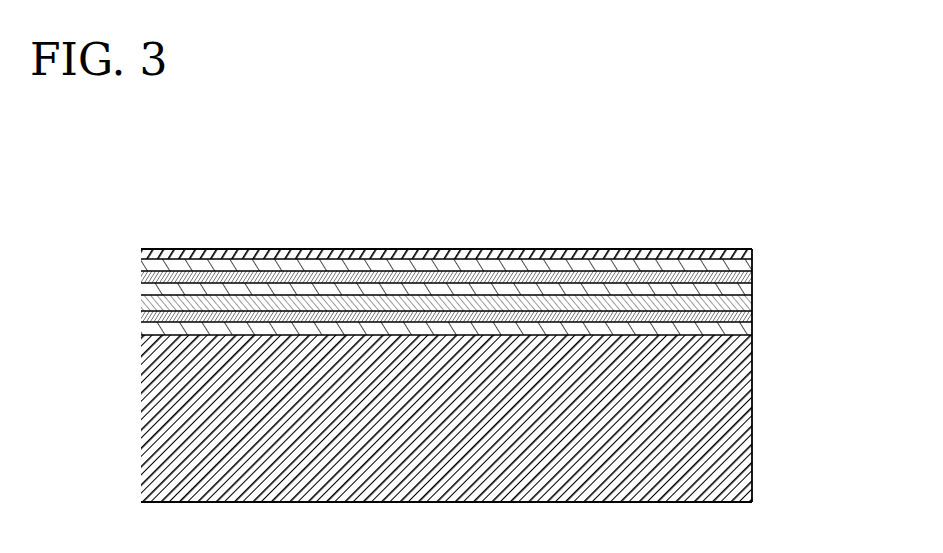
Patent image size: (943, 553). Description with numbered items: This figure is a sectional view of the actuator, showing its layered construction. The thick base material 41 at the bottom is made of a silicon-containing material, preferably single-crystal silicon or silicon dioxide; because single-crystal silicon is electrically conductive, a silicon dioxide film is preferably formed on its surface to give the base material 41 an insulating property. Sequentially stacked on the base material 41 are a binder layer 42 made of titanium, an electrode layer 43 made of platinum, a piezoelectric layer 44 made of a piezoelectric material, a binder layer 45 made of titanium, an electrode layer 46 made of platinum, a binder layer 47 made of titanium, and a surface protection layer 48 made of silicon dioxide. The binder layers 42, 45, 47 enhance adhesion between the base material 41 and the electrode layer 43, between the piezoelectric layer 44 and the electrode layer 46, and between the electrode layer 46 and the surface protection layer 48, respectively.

The base material 41 is at (753, 411).
The binder layer 42 is at (753, 329).
The electrode layer 43 is at (753, 317).
The piezoelectric layer 44 is at (753, 301).
The binder layer 45 is at (753, 291).
The electrode layer 46 is at (753, 280).
The binder layer 47 is at (753, 262).
The surface protection layer 48 is at (753, 253).